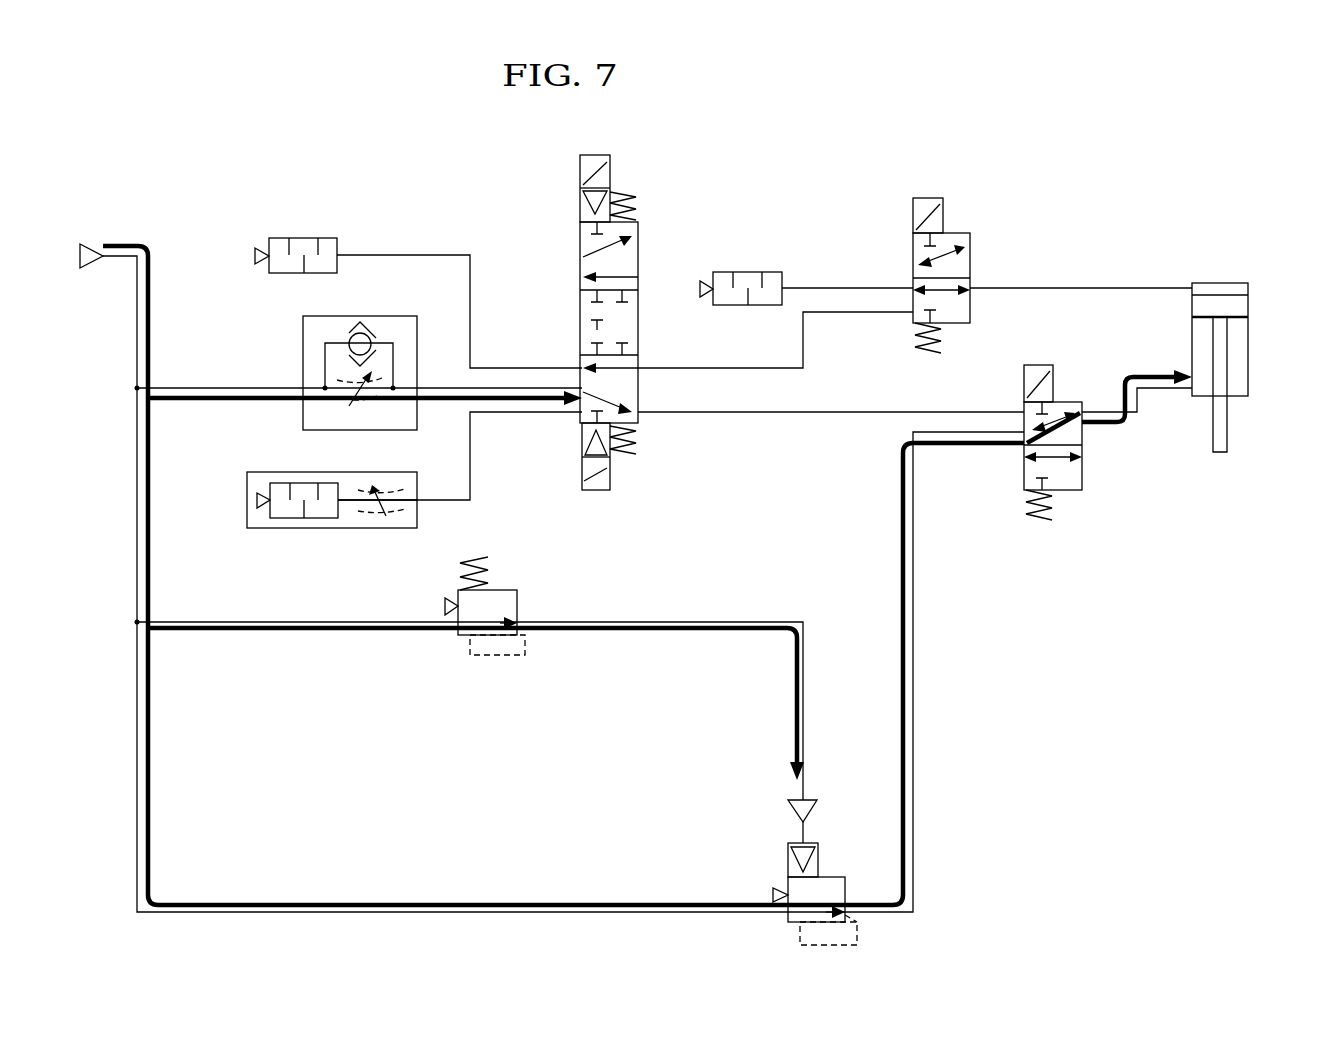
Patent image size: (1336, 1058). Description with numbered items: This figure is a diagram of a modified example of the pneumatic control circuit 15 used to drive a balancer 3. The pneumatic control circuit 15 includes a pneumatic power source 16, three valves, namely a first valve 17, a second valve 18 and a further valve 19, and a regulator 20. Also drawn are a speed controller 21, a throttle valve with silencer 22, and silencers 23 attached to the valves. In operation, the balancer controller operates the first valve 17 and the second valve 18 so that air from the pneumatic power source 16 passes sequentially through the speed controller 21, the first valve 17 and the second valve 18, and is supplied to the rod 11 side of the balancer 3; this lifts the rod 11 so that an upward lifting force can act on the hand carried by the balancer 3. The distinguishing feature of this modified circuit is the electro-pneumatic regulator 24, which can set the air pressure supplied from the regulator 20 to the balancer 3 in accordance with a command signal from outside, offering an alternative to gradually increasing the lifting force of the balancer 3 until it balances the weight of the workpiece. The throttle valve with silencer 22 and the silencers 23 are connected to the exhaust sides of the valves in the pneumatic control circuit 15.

The balancer 3 is at (1248, 340).
The rod 11 is at (1227, 422).
The pneumatic control circuit 15 is at (378, 136).
The pneumatic power source 16 is at (91, 240).
The first valve 17 is at (662, 146).
The second valve 18 is at (1002, 389).
The valve 19 is at (978, 198).
The regulator 20 is at (829, 877).
The speed controller 21 is at (303, 345).
The throttle valve with silencer 22 is at (327, 528).
The silencer 23 is at (299, 238).
The electro-pneumatic regulator 24 is at (500, 590).